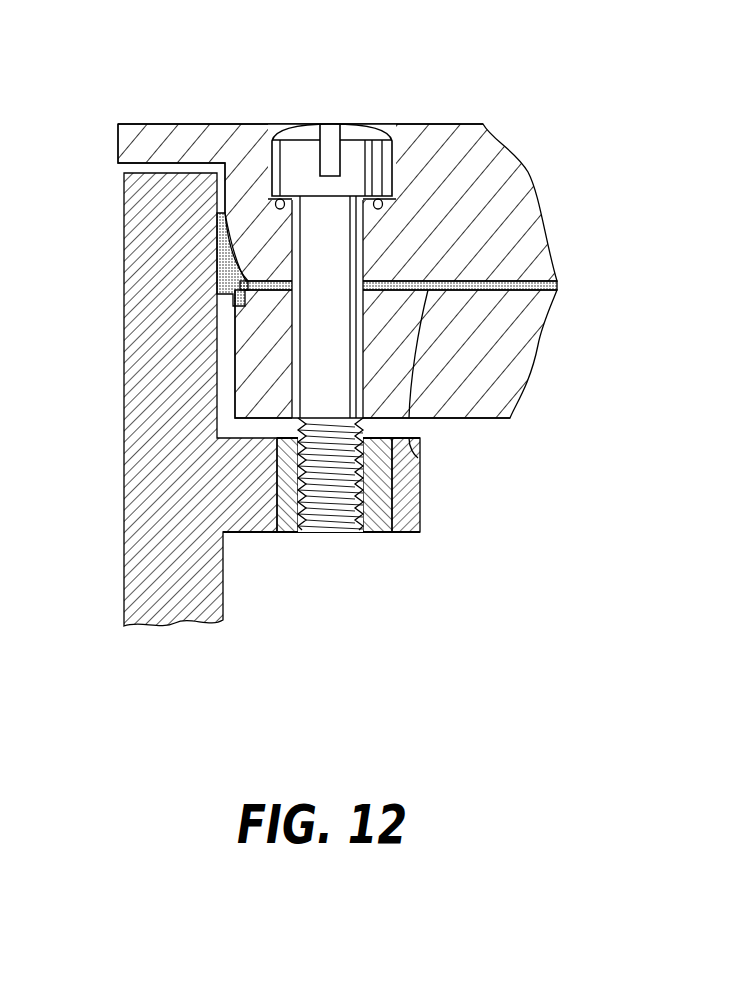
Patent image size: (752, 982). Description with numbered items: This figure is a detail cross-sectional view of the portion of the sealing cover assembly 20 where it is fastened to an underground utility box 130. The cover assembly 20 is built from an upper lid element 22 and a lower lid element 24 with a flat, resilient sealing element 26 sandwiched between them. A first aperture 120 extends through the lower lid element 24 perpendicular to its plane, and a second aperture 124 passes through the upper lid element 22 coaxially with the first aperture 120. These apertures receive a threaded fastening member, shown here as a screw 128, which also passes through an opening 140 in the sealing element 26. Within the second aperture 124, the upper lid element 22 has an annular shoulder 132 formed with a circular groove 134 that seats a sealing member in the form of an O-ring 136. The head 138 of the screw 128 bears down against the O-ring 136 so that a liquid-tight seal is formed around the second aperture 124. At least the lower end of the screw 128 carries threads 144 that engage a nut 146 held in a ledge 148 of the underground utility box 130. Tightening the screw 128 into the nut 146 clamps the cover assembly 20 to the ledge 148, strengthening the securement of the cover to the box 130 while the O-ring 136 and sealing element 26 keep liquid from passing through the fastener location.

The sealing cover assembly 20 is at (330, 318).
The upper lid element 22 is at (426, 123).
The lower lid element 24 is at (510, 375).
The sealing element 26 is at (349, 514).
The first aperture 120 is at (295, 328).
The second aperture 124 is at (439, 288).
The screw 128 is at (352, 270).
The underground utility box 130 is at (217, 311).
The annular shoulder 132 is at (281, 202).
The circular groove 134 is at (275, 207).
The O-ring 136 is at (392, 201).
The head 138 is at (345, 124).
The opening 140 is at (440, 281).
The threads 144 is at (306, 480).
The nut 146 is at (386, 525).
The ledge 148 is at (407, 534).